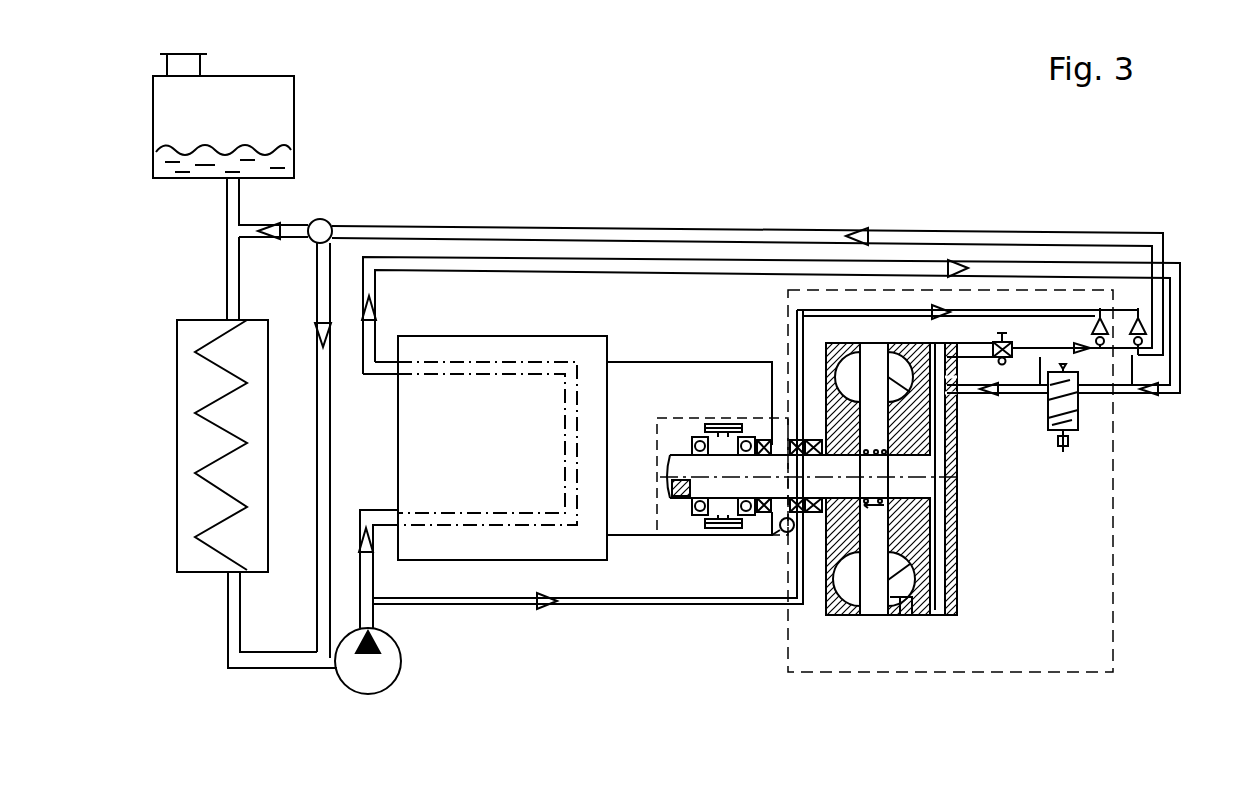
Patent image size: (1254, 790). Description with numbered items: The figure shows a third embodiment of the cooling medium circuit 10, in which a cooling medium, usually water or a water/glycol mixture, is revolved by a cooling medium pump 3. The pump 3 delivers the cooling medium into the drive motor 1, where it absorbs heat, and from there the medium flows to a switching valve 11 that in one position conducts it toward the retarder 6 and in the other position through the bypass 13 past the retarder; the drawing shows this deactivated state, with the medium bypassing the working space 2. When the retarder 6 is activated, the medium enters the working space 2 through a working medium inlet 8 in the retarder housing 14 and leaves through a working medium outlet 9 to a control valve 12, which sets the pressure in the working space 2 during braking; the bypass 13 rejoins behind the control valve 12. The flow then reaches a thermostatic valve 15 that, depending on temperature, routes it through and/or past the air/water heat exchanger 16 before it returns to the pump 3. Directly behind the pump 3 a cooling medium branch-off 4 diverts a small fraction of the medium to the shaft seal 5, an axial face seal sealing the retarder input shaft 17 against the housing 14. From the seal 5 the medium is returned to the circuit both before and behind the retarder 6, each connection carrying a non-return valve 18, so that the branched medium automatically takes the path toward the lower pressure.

The drive motor 1 is at (600, 347).
The working space 2 is at (872, 583).
The cooling medium pump 3 is at (392, 660).
The cooling medium branch-off 4 is at (377, 598).
The shaft seal 5 is at (800, 440).
The retarder 6 is at (955, 556).
The working medium inlet 8 is at (962, 405).
The working medium outlet 9 is at (952, 372).
The cooling medium circuit 10 is at (516, 188).
The switching valve 11 is at (1080, 432).
The control valve 12 is at (1012, 350).
The bypass 13 is at (1040, 385).
The retarder housing 14 is at (962, 615).
The thermostatic valve 15 is at (328, 220).
The air/water heat exchanger 16 is at (205, 565).
The retarder input shaft 17 is at (775, 520).
The non-return valve 18 is at (1102, 300).